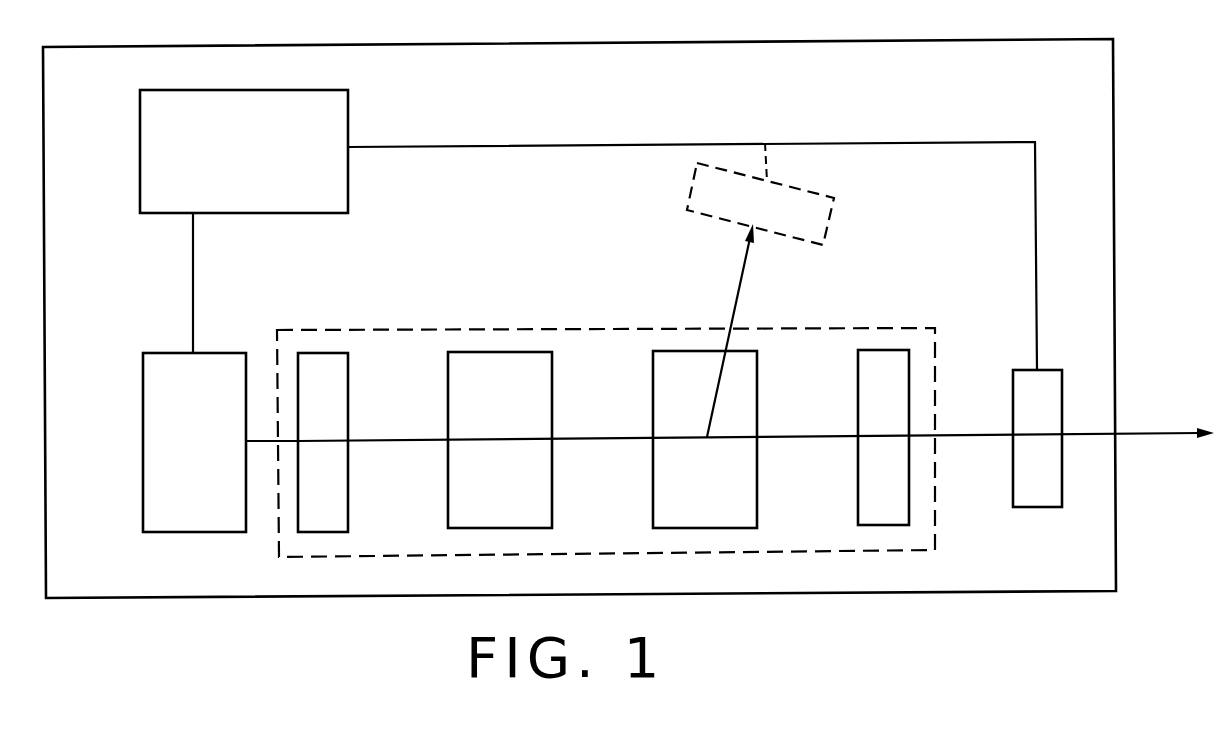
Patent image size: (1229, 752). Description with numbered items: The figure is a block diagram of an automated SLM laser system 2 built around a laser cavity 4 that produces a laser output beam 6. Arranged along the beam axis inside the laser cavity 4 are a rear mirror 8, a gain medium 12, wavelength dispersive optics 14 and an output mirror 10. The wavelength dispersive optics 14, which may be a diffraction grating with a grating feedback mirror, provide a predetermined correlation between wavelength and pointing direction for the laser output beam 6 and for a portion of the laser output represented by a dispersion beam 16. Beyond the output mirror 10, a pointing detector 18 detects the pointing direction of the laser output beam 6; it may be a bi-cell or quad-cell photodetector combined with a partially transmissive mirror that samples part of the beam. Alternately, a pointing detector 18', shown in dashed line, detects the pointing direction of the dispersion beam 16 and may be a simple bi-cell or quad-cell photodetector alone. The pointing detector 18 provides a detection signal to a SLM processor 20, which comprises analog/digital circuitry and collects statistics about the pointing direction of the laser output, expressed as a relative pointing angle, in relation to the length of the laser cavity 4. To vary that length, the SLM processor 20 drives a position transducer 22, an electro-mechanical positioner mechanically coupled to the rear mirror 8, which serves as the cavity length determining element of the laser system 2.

The automated SLM laser system 2 is at (972, 91).
The laser cavity 4 is at (858, 328).
The laser output beam 6 is at (1152, 433).
The rear mirror 8 is at (338, 403).
The output mirror 10 is at (871, 380).
The gain medium 12 is at (545, 392).
The wavelength dispersive optics 14 is at (663, 510).
The dispersion beam 16 is at (738, 308).
The pointing detector 18 is at (1062, 431).
The pointing detector 18' is at (791, 194).
The SLM processor 20 is at (275, 204).
The position transducer 22 is at (187, 522).